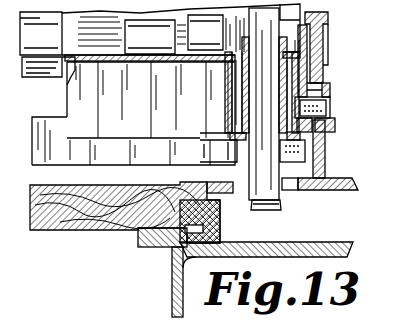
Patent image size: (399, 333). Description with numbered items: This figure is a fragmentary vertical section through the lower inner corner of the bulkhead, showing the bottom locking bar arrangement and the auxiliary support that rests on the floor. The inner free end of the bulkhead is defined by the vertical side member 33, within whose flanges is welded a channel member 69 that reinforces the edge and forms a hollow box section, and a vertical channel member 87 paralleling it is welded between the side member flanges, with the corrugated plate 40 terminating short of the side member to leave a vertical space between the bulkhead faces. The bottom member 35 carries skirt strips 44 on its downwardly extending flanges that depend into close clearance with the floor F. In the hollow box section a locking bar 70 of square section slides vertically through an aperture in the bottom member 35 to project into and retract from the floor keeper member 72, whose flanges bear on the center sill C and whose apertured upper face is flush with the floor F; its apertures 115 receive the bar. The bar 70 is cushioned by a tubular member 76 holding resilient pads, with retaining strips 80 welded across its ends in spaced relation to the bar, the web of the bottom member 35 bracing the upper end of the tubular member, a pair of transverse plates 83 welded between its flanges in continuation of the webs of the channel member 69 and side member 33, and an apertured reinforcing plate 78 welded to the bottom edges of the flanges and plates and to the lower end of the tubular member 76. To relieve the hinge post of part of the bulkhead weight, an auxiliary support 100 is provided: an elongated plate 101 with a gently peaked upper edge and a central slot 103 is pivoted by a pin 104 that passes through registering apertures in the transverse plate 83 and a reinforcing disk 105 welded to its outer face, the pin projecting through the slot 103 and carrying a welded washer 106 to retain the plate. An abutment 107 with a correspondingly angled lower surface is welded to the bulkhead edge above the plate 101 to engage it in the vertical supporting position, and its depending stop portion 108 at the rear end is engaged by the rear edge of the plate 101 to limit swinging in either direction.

The vertical side member 33 is at (290, 12).
The bottom member 35 is at (126, 112).
The corrugated plate 40 is at (52, 44).
The skirt strips 44 is at (45, 122).
The channel member 69 is at (216, 35).
The locking bar 70 is at (280, 174).
The floor keeper member 72 is at (346, 178).
The tubular member 76 is at (223, 143).
The apertured plate 78 is at (236, 137).
The retaining strips 80 is at (290, 150).
The transverse plates 83 is at (224, 124).
The vertical channel member 87 is at (157, 42).
The auxiliary support 100 is at (336, 108).
The elongated plate 101 is at (326, 157).
The slot 103 is at (326, 138).
The pin 104 is at (335, 122).
The reinforcing disk 105 is at (323, 75).
The washer 106 is at (331, 88).
The abutment 107 is at (318, 17).
The depending stop portion 108 is at (325, 43).
The apertures 115 is at (292, 186).
The floor F is at (52, 222).
The center sill C is at (171, 290).